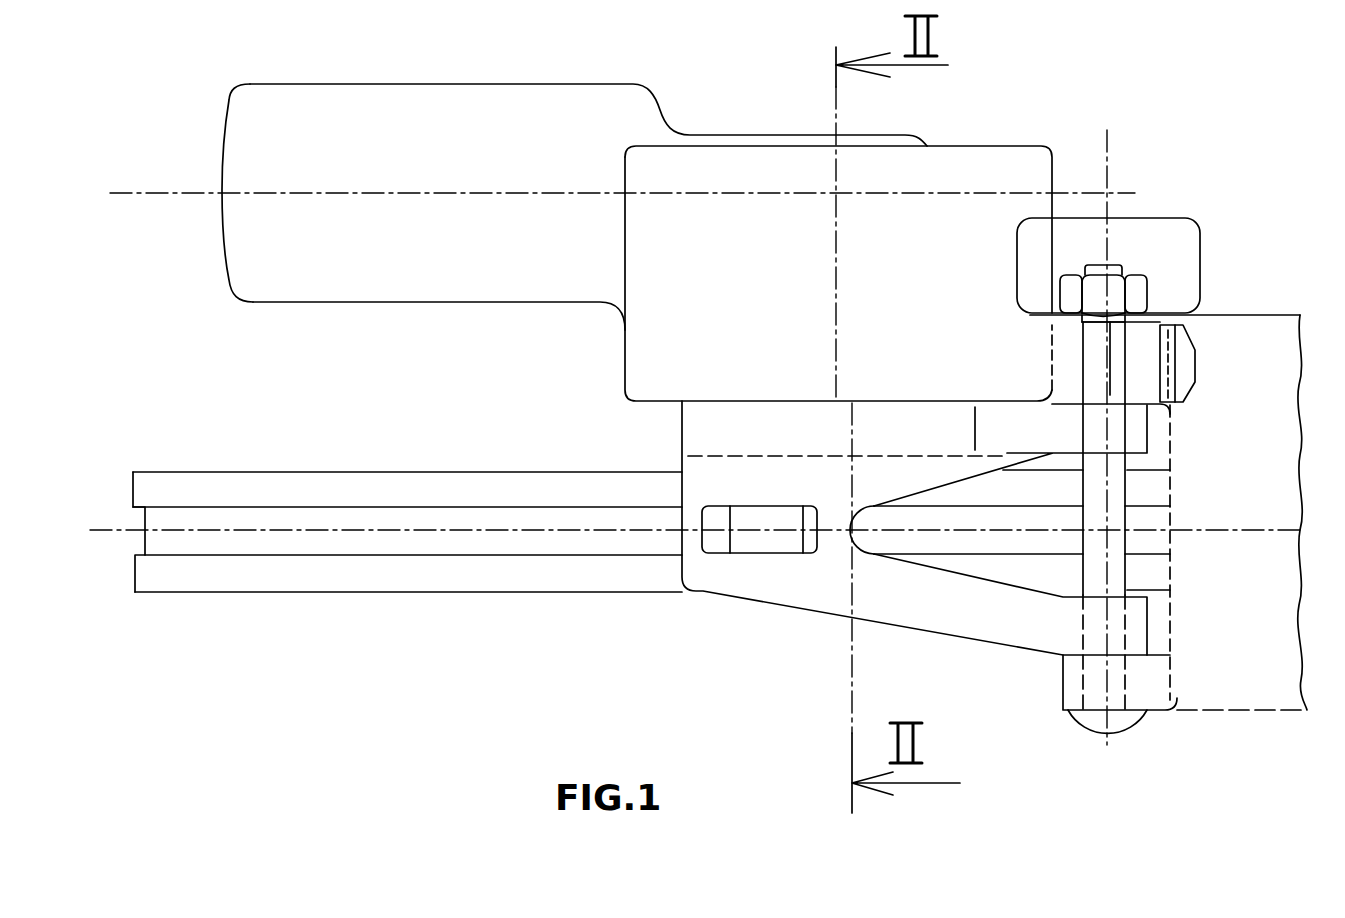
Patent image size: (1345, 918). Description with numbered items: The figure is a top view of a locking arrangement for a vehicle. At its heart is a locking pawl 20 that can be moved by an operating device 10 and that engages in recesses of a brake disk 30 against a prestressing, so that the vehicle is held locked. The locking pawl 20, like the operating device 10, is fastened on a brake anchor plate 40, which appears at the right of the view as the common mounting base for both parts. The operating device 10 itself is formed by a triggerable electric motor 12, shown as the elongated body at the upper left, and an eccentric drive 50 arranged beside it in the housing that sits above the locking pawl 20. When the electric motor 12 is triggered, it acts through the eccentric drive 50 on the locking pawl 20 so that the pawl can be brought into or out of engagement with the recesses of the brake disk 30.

The operating device 10 is at (997, 146).
The triggerable electric motor 12 is at (387, 100).
The locking pawl 20 is at (793, 592).
The brake disk 30 is at (428, 577).
The brake anchor plate 40 is at (1228, 702).
The eccentric drive 50 is at (725, 167).